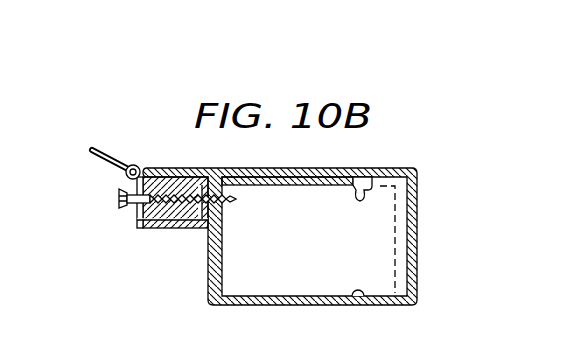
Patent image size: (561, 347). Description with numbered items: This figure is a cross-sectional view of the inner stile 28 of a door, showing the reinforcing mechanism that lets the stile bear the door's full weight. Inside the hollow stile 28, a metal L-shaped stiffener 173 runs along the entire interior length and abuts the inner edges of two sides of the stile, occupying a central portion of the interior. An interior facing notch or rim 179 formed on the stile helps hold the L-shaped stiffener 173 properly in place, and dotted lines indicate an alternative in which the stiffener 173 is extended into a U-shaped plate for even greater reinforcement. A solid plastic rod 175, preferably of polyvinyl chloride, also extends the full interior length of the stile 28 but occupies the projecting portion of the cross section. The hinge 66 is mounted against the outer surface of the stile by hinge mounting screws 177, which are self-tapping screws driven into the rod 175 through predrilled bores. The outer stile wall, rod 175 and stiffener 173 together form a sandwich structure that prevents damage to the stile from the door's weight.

The inner stile 28 is at (418, 243).
The L-shaped stiffener 173 is at (318, 170).
The interior facing notch or rim 179 is at (366, 190).
The solid plastic rod 175 is at (150, 230).
The hinge mounting screws 177 is at (118, 191).
The hinge 66 is at (134, 160).